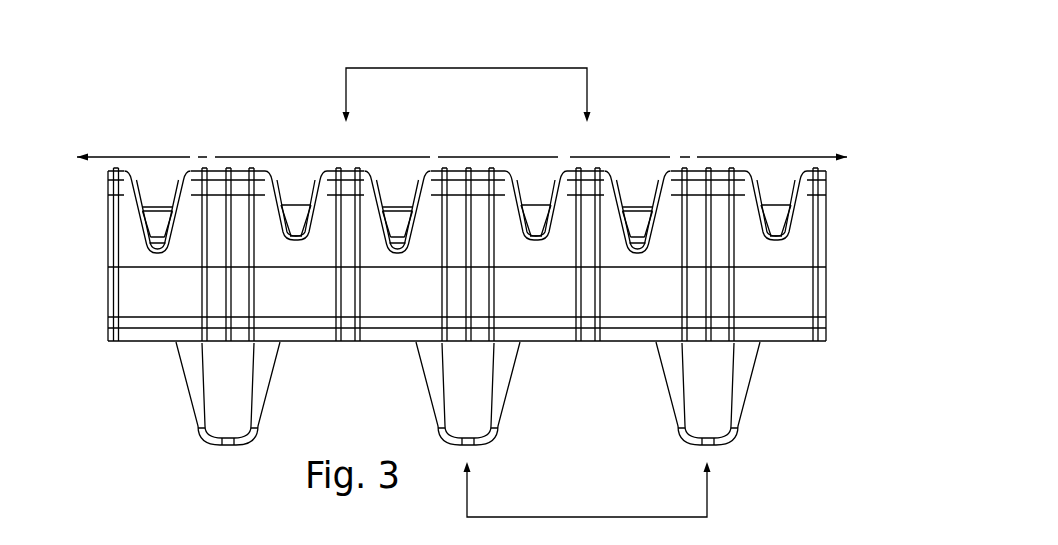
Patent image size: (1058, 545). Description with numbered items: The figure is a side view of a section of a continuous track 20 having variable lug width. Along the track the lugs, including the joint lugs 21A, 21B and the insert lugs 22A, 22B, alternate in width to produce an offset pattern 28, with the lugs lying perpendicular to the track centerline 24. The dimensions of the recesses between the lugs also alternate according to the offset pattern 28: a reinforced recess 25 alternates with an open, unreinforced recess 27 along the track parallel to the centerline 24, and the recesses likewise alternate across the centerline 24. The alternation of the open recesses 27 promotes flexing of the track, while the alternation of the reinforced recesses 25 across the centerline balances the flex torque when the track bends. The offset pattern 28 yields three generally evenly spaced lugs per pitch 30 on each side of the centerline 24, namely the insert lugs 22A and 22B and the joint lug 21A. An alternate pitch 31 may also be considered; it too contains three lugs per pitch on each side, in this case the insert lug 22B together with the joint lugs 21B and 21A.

The track 20 is at (115, 295).
The joint lug 21A is at (591, 170).
The joint lug 21B is at (351, 170).
The insert lug 22A is at (453, 170).
The insert lug 22B is at (720, 178).
The centerline 24 is at (153, 157).
The reinforced recess 25 is at (536, 201).
The recess 27 is at (399, 201).
The offset pattern 28 is at (765, 108).
The pitch 30 is at (540, 517).
The alternate pitch 31 is at (453, 68).